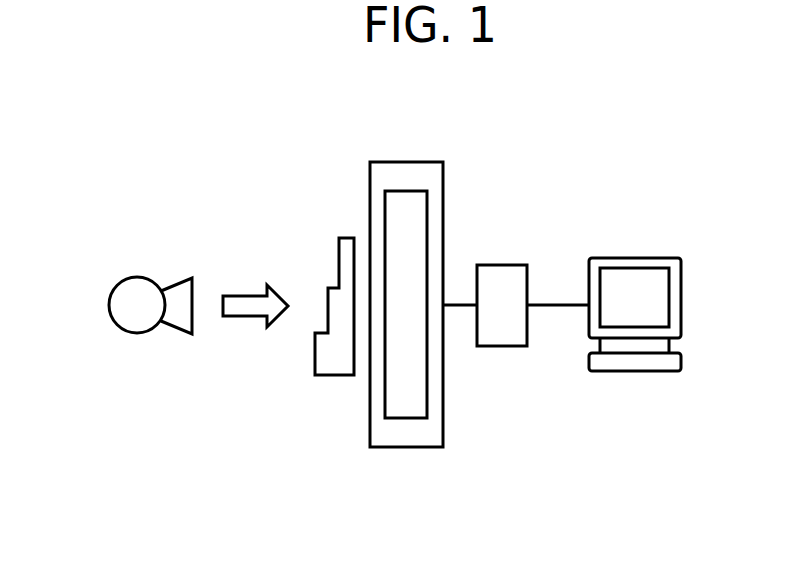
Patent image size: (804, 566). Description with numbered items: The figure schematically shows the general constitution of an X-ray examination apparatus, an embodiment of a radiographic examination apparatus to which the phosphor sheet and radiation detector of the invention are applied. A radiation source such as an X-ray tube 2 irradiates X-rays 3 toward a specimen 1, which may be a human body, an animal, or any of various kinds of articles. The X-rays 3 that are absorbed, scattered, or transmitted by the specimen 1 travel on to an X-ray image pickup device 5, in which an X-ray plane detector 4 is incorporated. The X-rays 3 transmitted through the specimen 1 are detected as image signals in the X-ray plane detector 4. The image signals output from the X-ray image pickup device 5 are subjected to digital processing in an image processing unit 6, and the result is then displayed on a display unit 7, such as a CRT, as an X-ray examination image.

The specimen 1 is at (345, 238).
The X-ray tube 2 is at (139, 262).
The X-rays 3 is at (243, 296).
The X-ray plane detector 4 is at (370, 402).
The X-ray image pickup device 5 is at (404, 162).
The image processing unit 6 is at (499, 265).
The display unit 7 is at (634, 258).